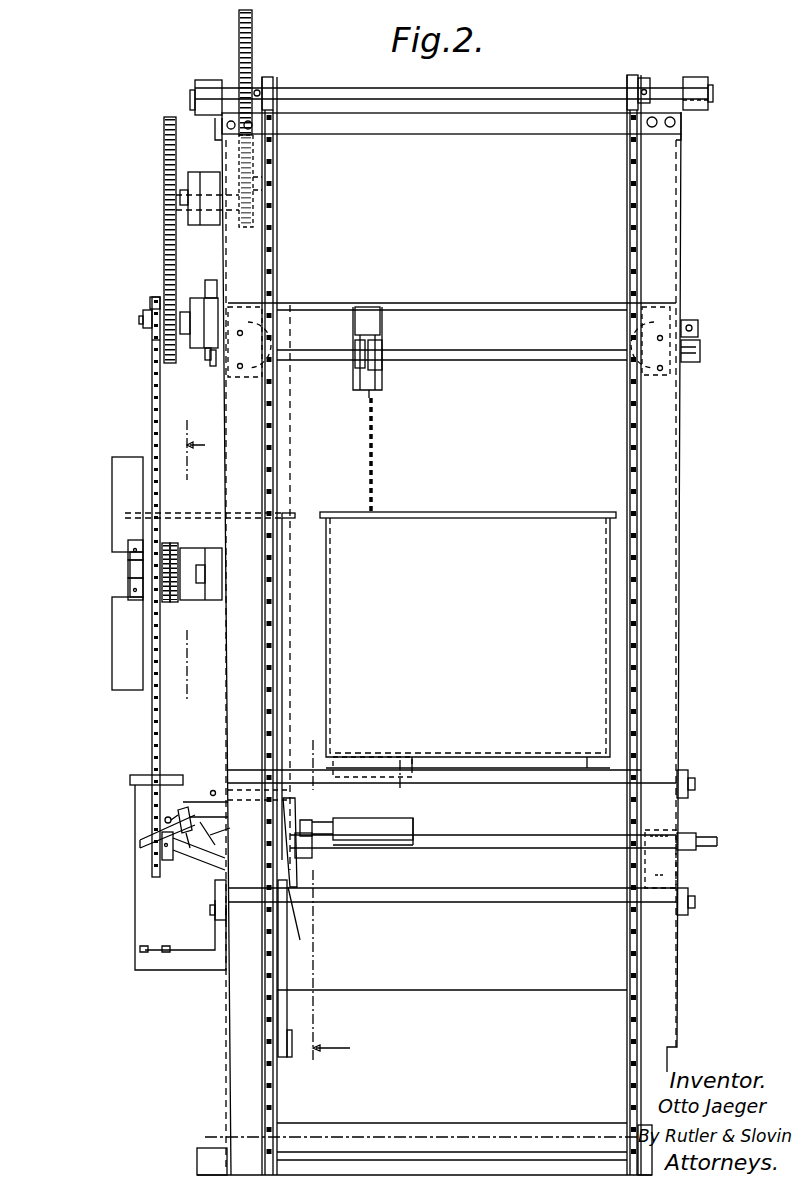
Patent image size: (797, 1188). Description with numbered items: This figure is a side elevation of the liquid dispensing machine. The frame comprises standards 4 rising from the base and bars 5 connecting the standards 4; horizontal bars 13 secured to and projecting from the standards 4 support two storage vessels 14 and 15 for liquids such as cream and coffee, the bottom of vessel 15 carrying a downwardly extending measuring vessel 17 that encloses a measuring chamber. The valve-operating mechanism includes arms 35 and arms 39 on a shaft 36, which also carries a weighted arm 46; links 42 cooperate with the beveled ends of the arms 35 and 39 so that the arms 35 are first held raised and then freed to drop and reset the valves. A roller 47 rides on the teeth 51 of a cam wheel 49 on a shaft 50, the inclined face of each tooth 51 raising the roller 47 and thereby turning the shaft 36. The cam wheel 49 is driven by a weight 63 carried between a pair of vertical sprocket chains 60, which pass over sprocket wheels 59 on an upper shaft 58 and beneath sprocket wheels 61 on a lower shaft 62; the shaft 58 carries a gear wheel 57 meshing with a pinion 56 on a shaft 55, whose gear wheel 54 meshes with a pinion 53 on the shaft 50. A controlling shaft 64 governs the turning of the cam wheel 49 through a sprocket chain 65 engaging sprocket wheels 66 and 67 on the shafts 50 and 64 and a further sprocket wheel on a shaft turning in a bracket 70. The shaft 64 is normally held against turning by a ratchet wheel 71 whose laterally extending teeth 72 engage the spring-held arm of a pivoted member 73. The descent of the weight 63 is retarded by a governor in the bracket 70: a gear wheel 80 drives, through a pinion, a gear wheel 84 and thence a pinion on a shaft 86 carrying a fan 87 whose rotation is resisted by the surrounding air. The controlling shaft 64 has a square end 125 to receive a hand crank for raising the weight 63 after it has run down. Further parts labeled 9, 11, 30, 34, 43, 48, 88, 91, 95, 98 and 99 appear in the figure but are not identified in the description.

The standards 4 is at (676, 572).
The bars 5 is at (442, 128).
The center line 9 is at (192, 572).
The center line 11 is at (350, 921).
The horizontal bars 13 is at (690, 782).
The storage vessel 14 is at (190, 513).
The storage vessel 15 is at (490, 512).
The measuring vessel 17 is at (400, 805).
The rod 30 is at (415, 830).
The chain 34 is at (374, 432).
The arms 35 is at (382, 372).
The shaft 36 is at (566, 360).
The arms 39 is at (355, 375).
The links 42 is at (353, 332).
The clamp head 43 is at (380, 318).
The weighted arm 46 is at (700, 352).
The roller 47 is at (208, 280).
The bolt 48 is at (698, 325).
The cam wheel 49 is at (206, 358).
The shaft 50 is at (143, 318).
The tooth 51 is at (212, 366).
The pinion 53 is at (152, 345).
The gear wheel 54 is at (165, 138).
The shaft 55 is at (266, 192).
The pinion 56 is at (248, 227).
The gear wheel 57 is at (239, 32).
The shaft 58 is at (497, 90).
The sprocket wheels 59 is at (272, 80).
The sprocket chains 60 is at (278, 220).
The sprocket wheels 61 is at (280, 1152).
The shaft 62 is at (450, 1137).
The weight 63 is at (483, 990).
The controlling shaft 64 is at (505, 840).
The sprocket chain 65 is at (152, 397).
The sprocket wheel 66 is at (152, 298).
The sprocket wheel 67 is at (152, 870).
The bracket 70 is at (178, 560).
The ratchet wheel 71 is at (298, 868).
The ratchet teeth 72 is at (296, 888).
The member 73 is at (280, 1010).
The gear wheel 80 is at (128, 590).
The gear wheel 84 is at (128, 552).
The shaft 86 is at (128, 570).
The fan 87 is at (115, 478).
The housing 88 is at (132, 808).
The latch 91 is at (210, 895).
The pawl 95 is at (178, 818).
The link 98 is at (213, 793).
The lever 99 is at (200, 862).
The square end 125 is at (696, 836).